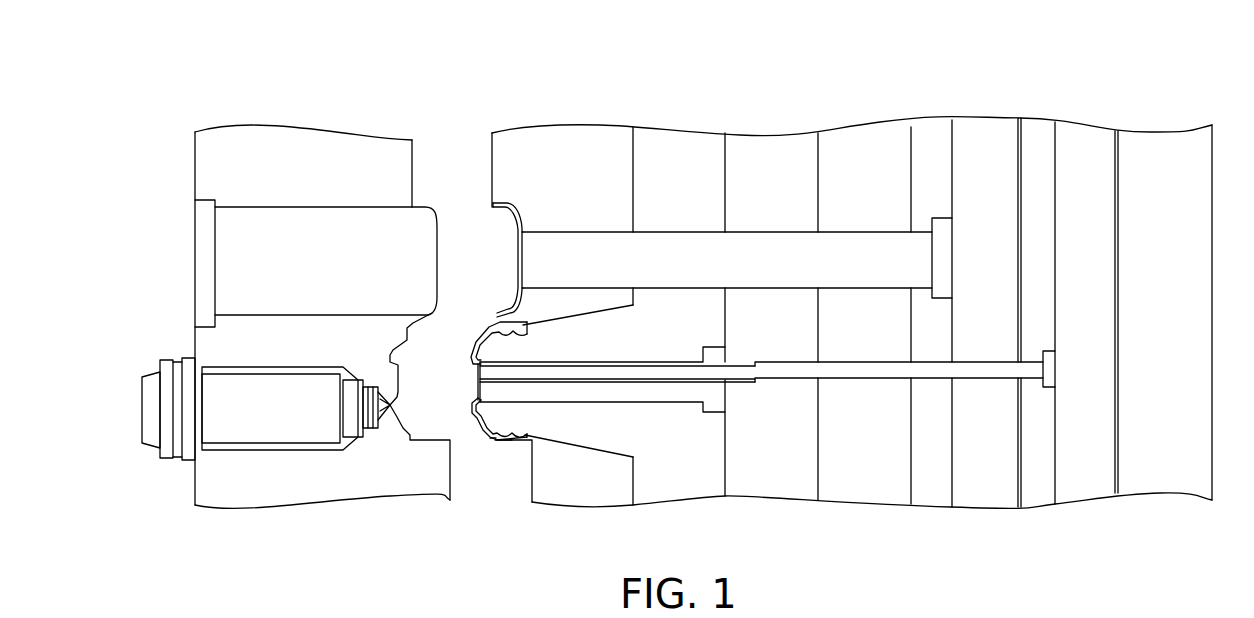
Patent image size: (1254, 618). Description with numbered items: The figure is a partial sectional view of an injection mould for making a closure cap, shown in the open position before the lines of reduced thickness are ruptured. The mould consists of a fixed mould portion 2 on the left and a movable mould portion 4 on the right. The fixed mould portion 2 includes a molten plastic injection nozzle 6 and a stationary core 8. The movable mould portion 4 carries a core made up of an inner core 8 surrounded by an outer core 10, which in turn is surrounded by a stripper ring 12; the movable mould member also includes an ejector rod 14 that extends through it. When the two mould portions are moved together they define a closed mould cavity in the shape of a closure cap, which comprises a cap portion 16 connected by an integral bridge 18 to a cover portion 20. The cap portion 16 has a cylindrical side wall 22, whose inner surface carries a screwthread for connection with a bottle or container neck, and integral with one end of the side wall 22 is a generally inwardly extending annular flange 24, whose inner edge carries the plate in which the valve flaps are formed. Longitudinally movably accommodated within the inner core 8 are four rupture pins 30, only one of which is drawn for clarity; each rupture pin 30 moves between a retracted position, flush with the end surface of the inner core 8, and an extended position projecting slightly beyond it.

The fixed mould portion 2 is at (239, 116).
The movable mould portion 4 is at (817, 112).
The molten plastic injection nozzle 6 is at (273, 430).
The core 8 is at (302, 215).
The outer core 10 is at (612, 425).
The stripper ring 12 is at (552, 303).
The ejector rod 14 is at (670, 250).
The cap portion 16 is at (483, 448).
The integral bridge 18 is at (496, 320).
The cover portion 20 is at (508, 218).
The cylindrical side wall 22 is at (507, 442).
The annular flange 24 is at (472, 415).
The rupture pin 30 is at (645, 370).